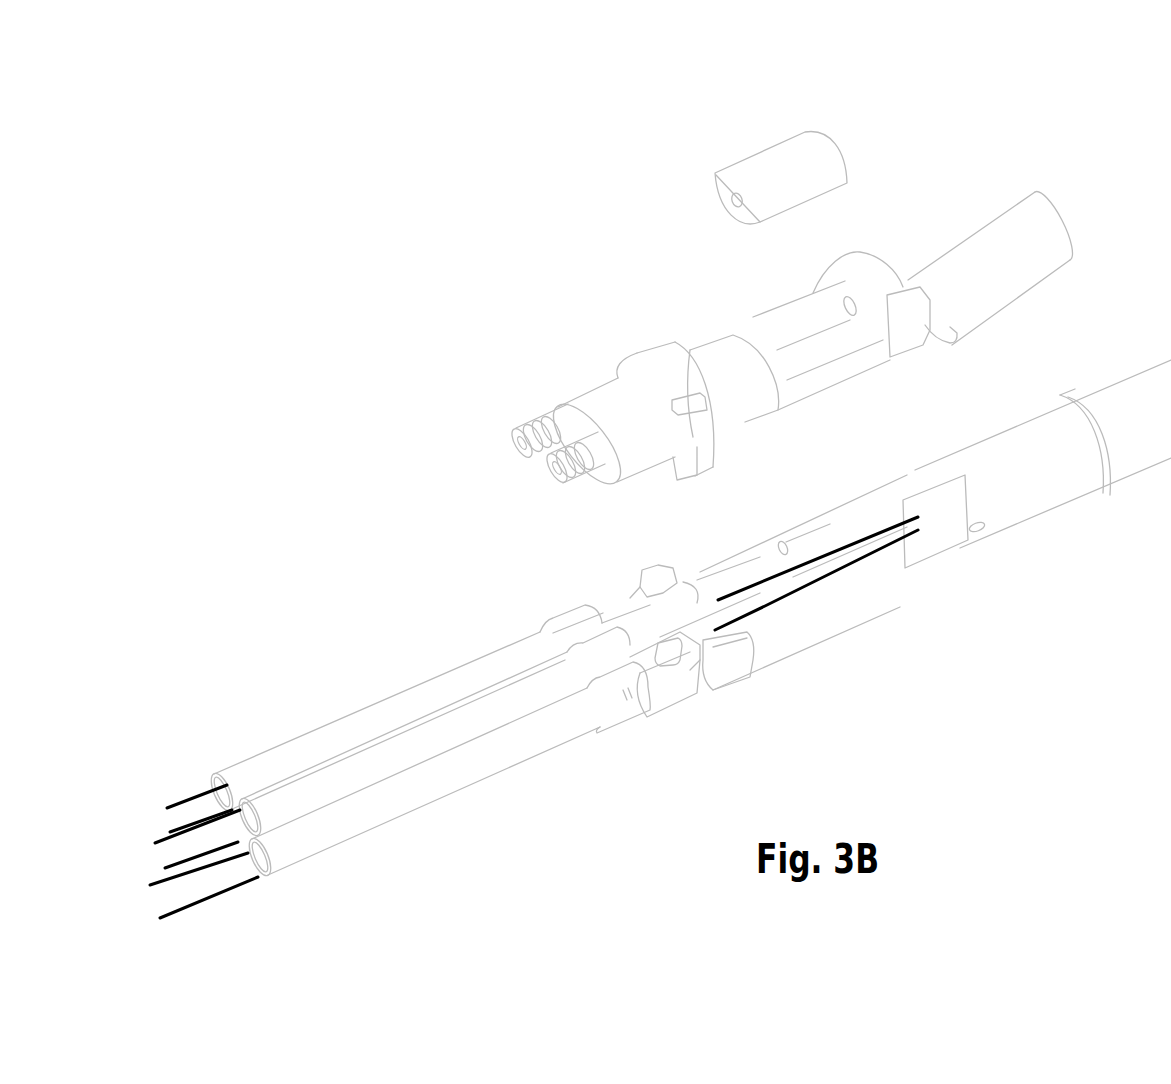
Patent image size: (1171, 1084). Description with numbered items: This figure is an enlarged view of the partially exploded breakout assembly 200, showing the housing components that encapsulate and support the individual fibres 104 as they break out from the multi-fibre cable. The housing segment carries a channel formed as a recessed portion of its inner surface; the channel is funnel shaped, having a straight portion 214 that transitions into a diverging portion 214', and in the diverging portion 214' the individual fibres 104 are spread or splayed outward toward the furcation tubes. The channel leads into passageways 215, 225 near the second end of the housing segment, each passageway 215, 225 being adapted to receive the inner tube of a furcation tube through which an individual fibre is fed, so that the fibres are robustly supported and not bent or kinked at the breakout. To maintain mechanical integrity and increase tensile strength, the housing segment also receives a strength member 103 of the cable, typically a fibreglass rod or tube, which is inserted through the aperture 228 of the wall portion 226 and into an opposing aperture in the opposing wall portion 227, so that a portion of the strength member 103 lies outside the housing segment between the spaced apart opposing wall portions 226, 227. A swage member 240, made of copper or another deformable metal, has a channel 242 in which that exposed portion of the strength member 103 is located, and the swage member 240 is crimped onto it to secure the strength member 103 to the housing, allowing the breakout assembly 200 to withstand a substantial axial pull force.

The breakout assembly 200 is at (413, 288).
The swage member 240 is at (810, 183).
The channel 242 is at (732, 201).
The passageway 225 is at (582, 395).
The wall portion 226 is at (828, 283).
The opposing wall portion 227 is at (758, 333).
The aperture 228 is at (853, 303).
The strength member 103 is at (835, 525).
The individual fibres 104 is at (906, 520).
The straight portion 214 is at (818, 523).
The diverging portion 214' is at (816, 629).
The passageway 215 is at (645, 650).